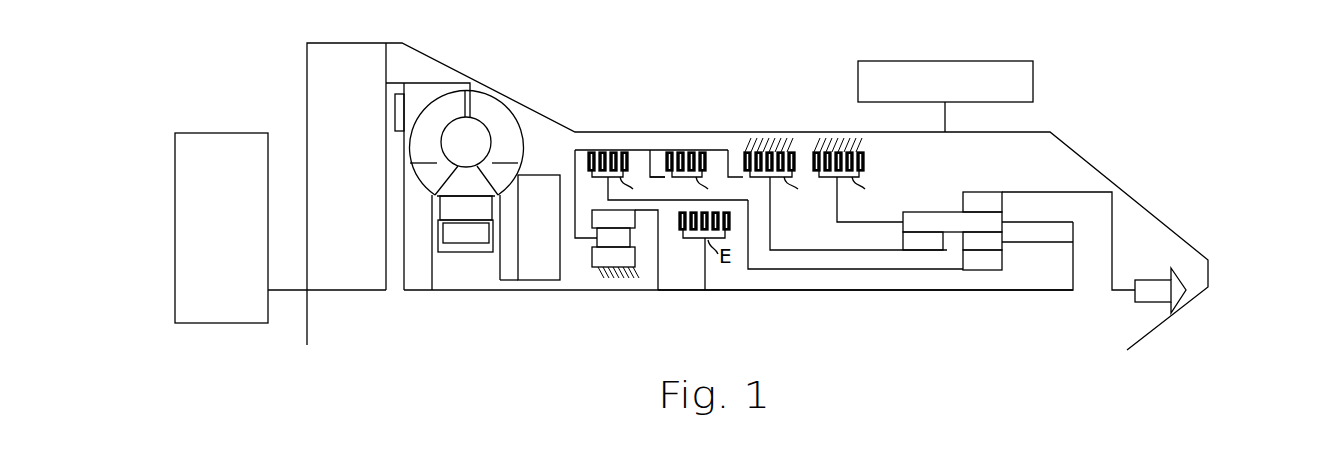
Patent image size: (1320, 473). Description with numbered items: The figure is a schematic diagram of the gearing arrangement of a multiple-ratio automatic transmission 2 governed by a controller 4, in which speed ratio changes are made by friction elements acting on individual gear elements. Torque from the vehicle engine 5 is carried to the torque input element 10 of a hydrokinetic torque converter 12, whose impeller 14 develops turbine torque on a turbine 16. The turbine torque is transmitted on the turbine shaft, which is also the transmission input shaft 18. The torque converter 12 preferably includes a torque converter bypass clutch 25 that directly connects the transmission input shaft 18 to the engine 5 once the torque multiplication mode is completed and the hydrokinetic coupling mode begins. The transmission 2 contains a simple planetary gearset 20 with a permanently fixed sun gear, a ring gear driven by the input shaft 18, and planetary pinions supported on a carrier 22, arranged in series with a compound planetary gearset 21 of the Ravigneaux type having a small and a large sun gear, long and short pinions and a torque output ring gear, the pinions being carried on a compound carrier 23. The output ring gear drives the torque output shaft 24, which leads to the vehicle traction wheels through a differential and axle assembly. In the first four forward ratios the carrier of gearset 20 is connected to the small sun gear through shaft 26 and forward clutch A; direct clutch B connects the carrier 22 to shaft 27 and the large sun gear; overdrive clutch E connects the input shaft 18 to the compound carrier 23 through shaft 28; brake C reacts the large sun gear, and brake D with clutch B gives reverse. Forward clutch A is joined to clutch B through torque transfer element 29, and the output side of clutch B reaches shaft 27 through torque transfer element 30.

The transmission 2 is at (829, 56).
The controller 4 is at (1033, 73).
The vehicle engine 5 is at (208, 133).
The torque input element 10 is at (370, 290).
The hydrokinetic torque converter 12 is at (516, 115).
The impeller 14 is at (505, 152).
The turbine 16 is at (424, 152).
The transmission input shaft 18 is at (520, 290).
The simple planetary gearset 20 is at (637, 261).
The compound planetary gearset 21 is at (1004, 261).
The carrier 22 is at (573, 172).
The compound carrier 23 is at (1077, 256).
The torque output shaft 24 is at (1113, 290).
The torque converter bypass clutch 25 is at (398, 82).
The shaft 26 is at (847, 269).
The shaft 27 is at (818, 250).
The shaft 28 is at (772, 290).
The torque transfer element 29 is at (646, 160).
The torque transfer element 30 is at (732, 160).